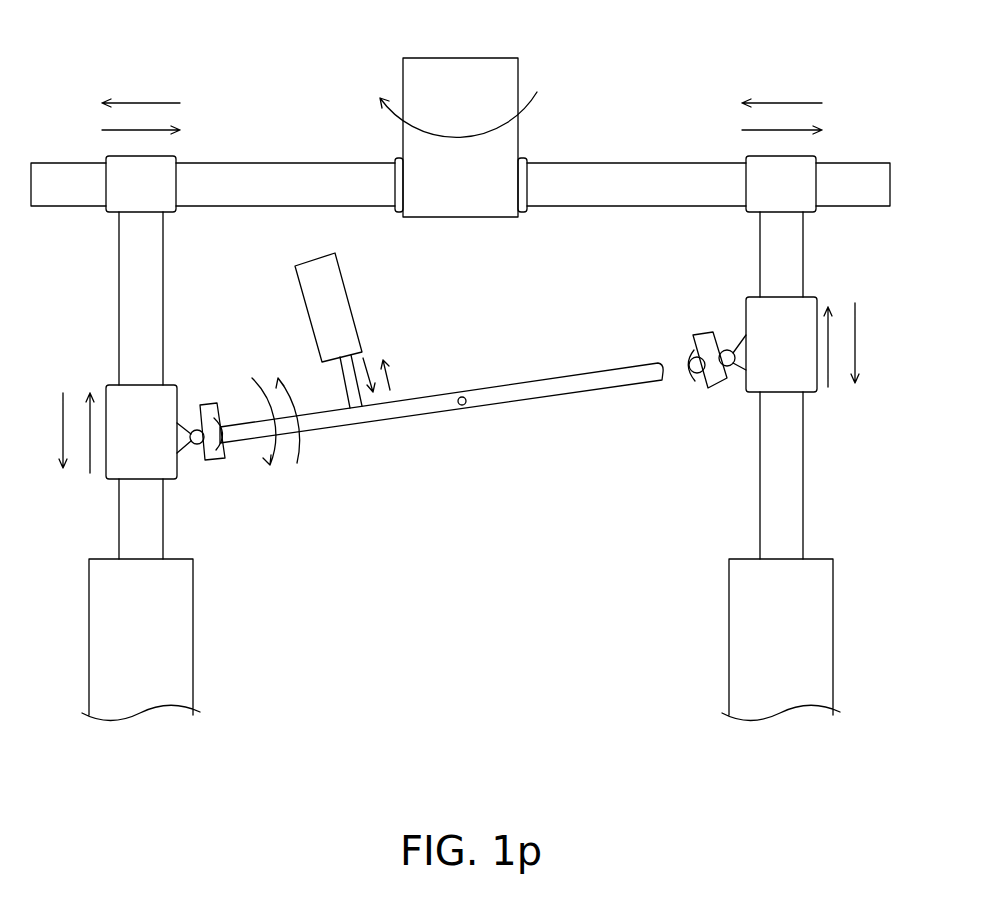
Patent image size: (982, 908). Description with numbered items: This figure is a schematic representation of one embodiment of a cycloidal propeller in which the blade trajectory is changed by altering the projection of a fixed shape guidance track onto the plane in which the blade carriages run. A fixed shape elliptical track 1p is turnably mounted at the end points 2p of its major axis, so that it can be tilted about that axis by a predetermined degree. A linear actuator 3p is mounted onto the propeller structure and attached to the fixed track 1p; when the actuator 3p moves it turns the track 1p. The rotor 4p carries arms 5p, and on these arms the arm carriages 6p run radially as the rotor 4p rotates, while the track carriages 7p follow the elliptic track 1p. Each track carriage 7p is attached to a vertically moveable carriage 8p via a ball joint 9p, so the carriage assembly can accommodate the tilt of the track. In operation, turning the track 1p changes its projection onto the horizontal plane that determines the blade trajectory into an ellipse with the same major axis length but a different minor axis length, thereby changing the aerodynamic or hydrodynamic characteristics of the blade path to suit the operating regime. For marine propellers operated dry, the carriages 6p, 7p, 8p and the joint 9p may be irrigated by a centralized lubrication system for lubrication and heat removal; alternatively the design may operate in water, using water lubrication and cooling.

The fixed shape elliptical track 1p is at (577, 372).
The end points of the major axis 2p is at (462, 408).
The linear actuator 3p is at (333, 277).
The rotor 4p is at (505, 73).
The rotor arms 5p is at (603, 178).
The arm carriages 6p is at (793, 172).
The track carriages 7p is at (217, 410).
The vertically moveable carriages 8p is at (793, 382).
The ball joint 9p is at (737, 353).